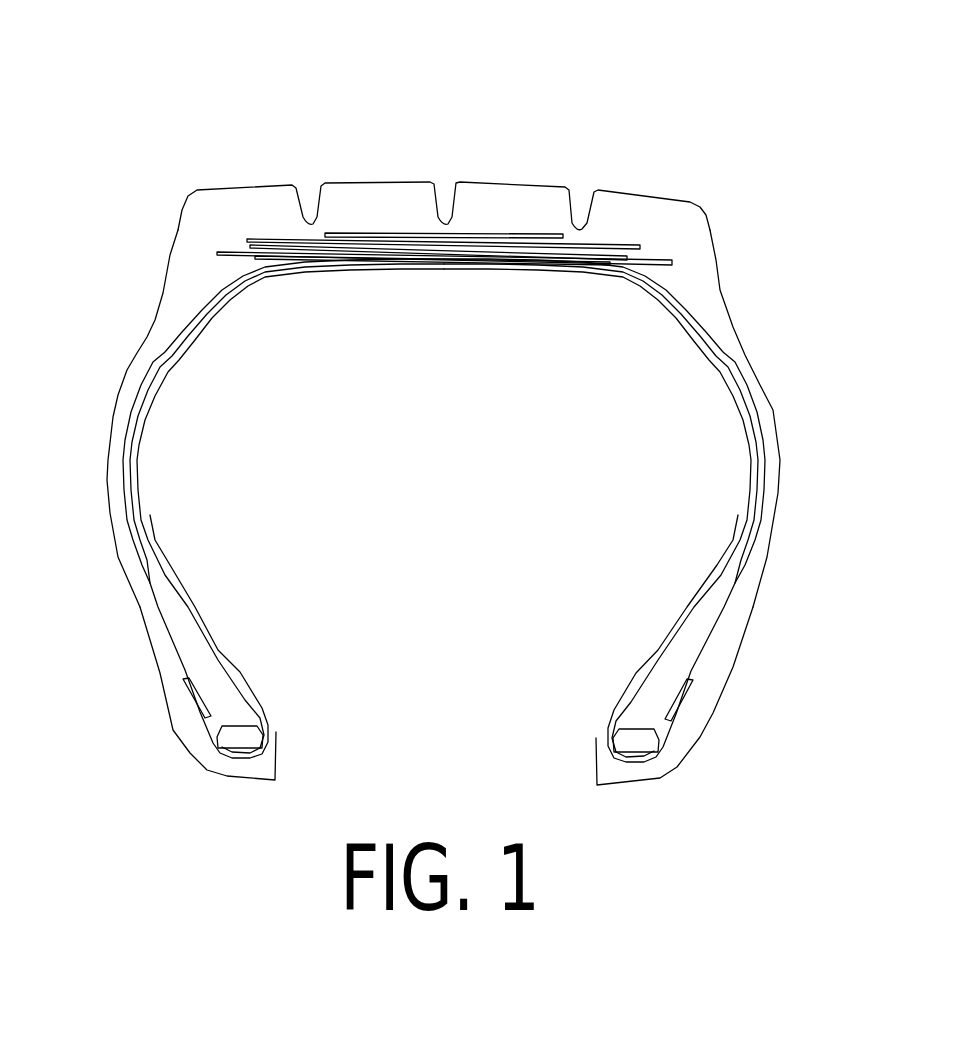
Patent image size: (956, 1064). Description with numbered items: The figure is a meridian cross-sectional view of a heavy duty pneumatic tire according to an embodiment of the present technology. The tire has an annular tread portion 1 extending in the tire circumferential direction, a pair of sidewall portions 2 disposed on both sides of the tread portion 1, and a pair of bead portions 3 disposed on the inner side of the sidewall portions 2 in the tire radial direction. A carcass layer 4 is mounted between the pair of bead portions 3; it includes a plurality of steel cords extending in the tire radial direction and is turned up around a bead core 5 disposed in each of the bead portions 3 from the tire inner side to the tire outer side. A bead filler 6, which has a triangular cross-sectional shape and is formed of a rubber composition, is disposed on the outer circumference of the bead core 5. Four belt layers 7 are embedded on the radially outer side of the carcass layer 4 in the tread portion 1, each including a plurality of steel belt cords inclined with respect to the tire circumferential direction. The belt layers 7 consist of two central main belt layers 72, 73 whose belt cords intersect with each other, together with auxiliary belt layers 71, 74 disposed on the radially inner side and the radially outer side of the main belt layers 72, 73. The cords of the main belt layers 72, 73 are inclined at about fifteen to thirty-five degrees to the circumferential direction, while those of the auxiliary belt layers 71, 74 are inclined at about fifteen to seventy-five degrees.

The tread portion 1 is at (523, 179).
The sidewall portion 2 is at (137, 353).
The bead portion 3 is at (173, 731).
The carcass layer 4 is at (693, 310).
The bead core 5 is at (242, 742).
The bead filler 6 is at (213, 688).
The belt layers 7 is at (444, 135).
The auxiliary belt layer 71 is at (350, 250).
The main belt layer 72 is at (444, 189).
The main belt layer 73 is at (287, 245).
The auxiliary belt layer 74 is at (392, 233).